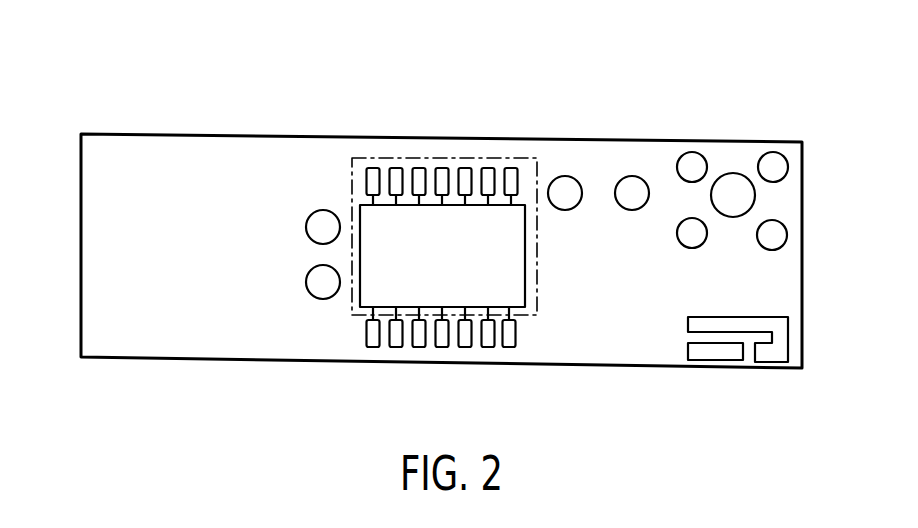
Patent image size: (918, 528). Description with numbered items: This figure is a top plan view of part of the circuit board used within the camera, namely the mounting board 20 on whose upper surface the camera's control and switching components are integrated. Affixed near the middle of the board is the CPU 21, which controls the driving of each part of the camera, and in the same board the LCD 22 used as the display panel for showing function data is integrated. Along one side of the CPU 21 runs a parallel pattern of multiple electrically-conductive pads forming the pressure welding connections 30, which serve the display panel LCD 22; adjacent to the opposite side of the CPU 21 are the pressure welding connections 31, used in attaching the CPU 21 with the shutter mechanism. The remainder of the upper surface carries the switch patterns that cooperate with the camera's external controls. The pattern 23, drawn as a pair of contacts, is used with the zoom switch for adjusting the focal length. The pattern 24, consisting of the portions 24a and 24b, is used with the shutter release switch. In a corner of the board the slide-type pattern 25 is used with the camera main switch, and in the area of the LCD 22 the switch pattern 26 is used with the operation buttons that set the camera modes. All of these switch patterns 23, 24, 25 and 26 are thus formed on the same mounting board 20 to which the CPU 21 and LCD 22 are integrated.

The mounting board 20 is at (600, 350).
The CPU 21 is at (512, 220).
The LCD 22 is at (372, 160).
The pattern 23 is at (622, 188).
The pattern 24 is at (738, 145).
The pattern portion 24a is at (688, 162).
The pattern portion 24b is at (755, 156).
The slide-type pattern 25 is at (725, 357).
The switch pattern 26 is at (310, 285).
The pressure welding connections 30 is at (393, 168).
The pressure welding connections 31 is at (508, 348).